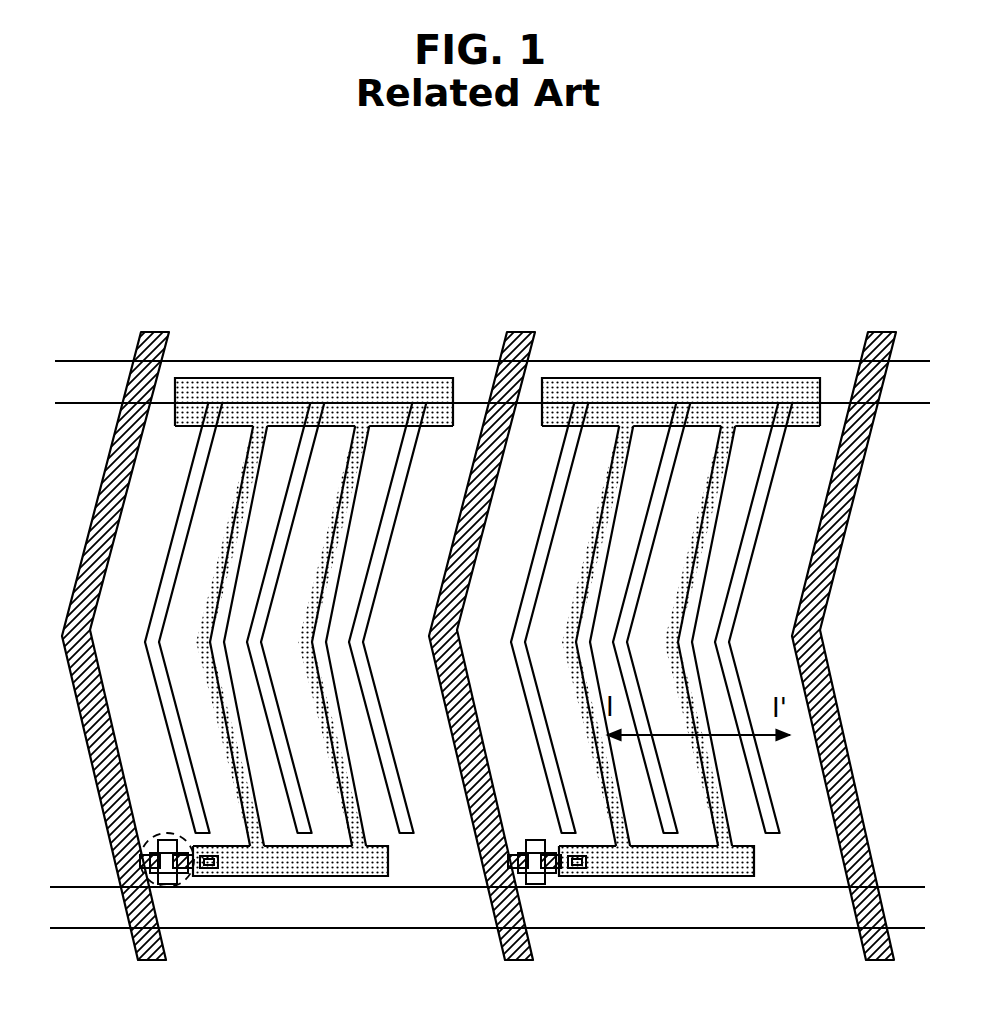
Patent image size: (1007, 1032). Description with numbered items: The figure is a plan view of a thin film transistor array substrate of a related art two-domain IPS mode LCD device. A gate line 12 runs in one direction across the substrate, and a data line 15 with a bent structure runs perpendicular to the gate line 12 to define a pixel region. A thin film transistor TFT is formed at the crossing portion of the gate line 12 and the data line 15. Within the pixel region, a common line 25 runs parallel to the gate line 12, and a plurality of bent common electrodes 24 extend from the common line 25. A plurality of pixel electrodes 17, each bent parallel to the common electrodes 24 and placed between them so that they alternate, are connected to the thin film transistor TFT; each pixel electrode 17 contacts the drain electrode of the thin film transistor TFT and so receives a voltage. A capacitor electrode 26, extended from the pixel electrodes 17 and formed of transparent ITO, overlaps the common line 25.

The gate line 12 is at (383, 928).
The data line 15 is at (108, 472).
The pixel electrode 17 is at (223, 558).
The common electrode 24 is at (180, 740).
The common line 25 is at (95, 373).
The capacitor electrode 26 is at (365, 390).
The thin film transistor TFT is at (140, 845).